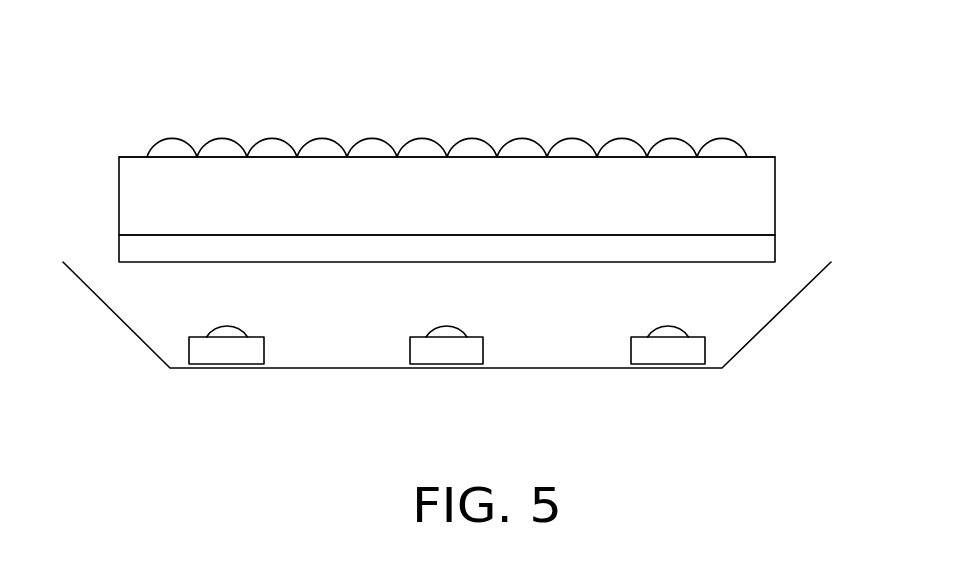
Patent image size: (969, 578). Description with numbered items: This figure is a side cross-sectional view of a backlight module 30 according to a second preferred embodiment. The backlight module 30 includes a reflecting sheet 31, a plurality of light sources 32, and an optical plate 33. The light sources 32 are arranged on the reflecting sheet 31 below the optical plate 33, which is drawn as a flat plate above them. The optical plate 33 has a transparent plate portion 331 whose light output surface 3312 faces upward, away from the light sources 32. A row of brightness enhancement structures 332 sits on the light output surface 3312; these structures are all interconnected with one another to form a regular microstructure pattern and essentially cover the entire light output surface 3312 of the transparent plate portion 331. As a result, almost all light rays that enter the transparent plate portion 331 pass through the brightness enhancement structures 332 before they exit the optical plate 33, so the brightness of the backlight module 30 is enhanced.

The backlight module 30 is at (453, 232).
The reflecting sheet 31 is at (447, 368).
The light sources 32 is at (674, 353).
The optical plate 33 is at (453, 171).
The transparent plate portion 331 is at (758, 193).
The brightness enhancement structures 332 is at (527, 148).
The light output surface 3312 is at (769, 147).